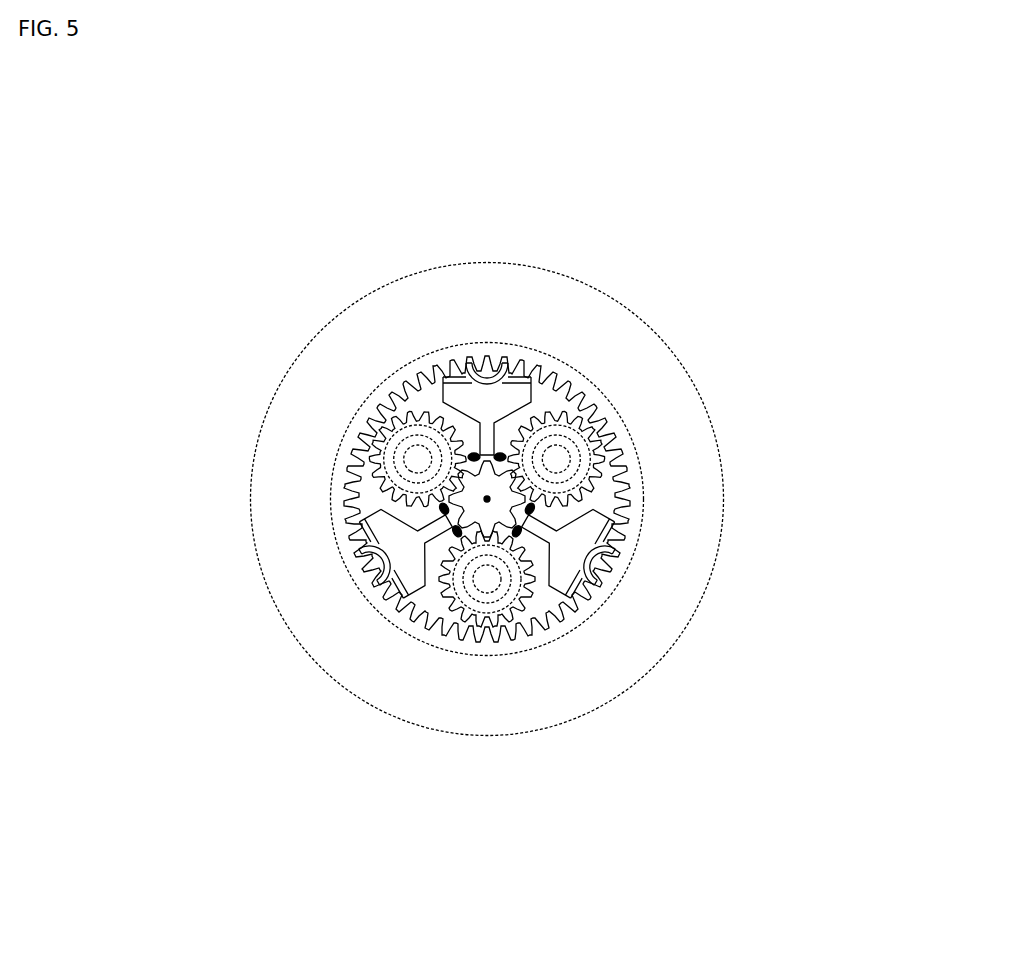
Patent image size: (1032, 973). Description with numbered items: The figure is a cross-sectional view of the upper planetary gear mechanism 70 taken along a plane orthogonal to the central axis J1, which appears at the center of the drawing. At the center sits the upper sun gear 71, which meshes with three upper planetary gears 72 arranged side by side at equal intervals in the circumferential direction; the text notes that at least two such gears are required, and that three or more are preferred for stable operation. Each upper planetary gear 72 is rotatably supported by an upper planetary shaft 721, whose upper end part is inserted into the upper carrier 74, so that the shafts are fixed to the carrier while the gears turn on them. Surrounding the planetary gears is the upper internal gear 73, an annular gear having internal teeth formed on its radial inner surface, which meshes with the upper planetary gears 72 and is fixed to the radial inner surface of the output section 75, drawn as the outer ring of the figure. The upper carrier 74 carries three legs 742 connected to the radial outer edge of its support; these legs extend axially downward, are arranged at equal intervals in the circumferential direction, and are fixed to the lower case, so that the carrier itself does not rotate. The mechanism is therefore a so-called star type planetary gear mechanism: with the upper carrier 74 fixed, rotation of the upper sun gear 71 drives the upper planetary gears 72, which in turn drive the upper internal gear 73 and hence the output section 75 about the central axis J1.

The upper planetary gear mechanism 70 is at (490, 500).
The upper sun gear 71 is at (282, 527).
The upper planetary gear 72 is at (524, 493).
The upper planetary shaft 721 is at (548, 493).
The upper internal gear 73 is at (487, 634).
The upper carrier 74 is at (467, 470).
The leg 742 is at (467, 471).
The output section 75 is at (529, 463).
The central axis J1 is at (700, 564).